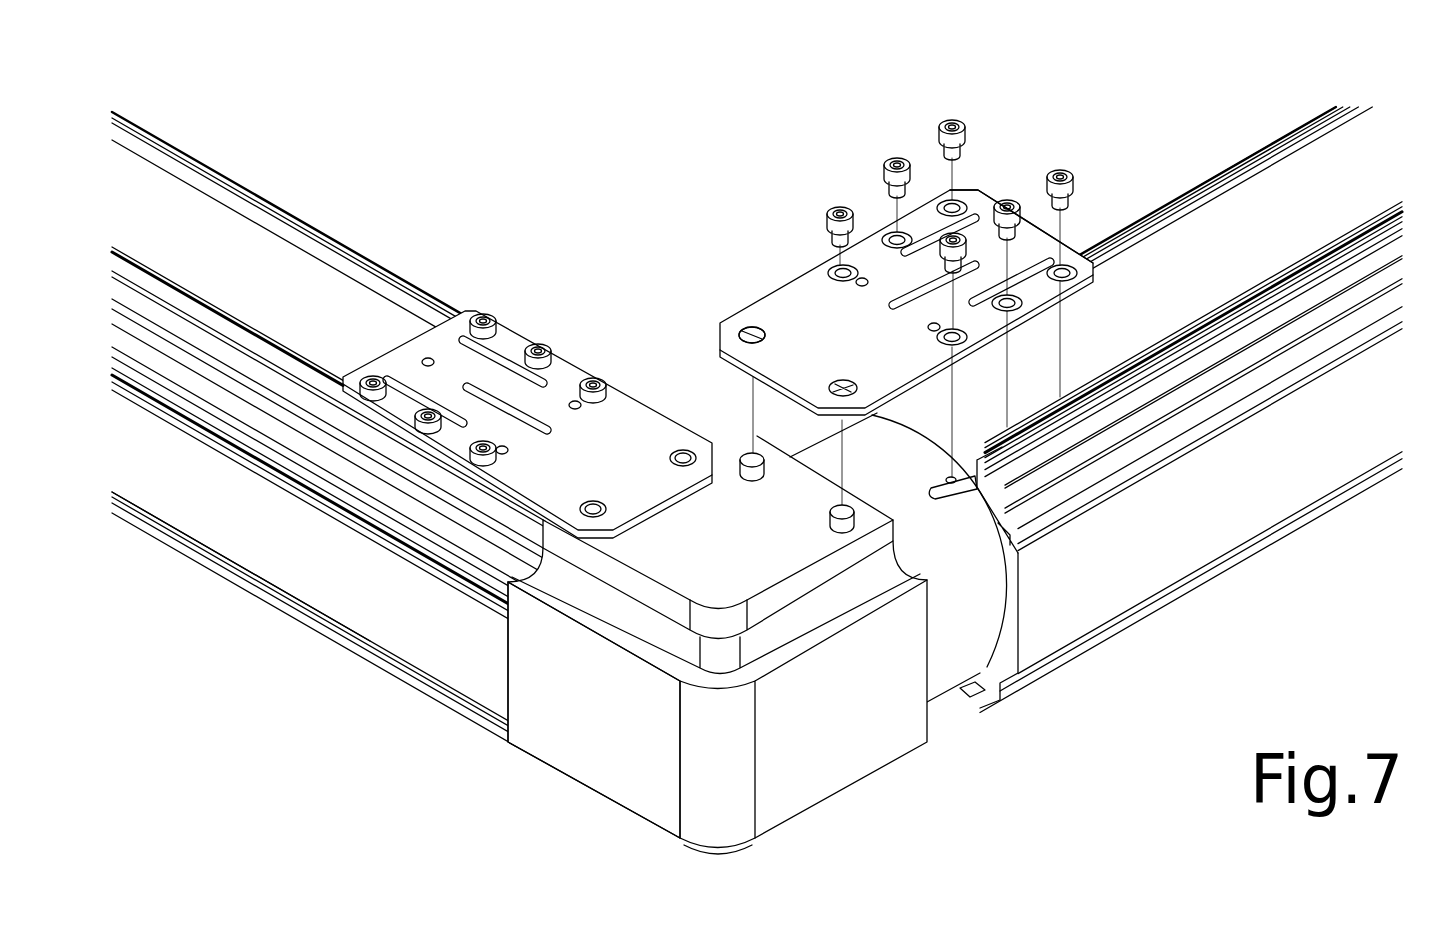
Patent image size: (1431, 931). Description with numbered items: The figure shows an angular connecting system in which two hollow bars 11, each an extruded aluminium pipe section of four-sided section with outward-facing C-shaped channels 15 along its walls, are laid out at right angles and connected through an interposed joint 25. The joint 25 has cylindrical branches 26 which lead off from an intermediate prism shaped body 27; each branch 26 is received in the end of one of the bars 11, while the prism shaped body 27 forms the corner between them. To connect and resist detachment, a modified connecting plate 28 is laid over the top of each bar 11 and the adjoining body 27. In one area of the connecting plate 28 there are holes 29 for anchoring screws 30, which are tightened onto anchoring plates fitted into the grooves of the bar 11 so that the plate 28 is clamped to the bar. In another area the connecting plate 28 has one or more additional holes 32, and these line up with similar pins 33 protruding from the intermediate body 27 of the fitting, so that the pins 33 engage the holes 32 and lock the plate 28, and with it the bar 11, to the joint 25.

The hollow bar 11 is at (213, 503).
The channels 15 is at (370, 653).
The joint 25 is at (675, 590).
The cylindrical branches 26 is at (943, 628).
The intermediate prism shaped body 27 is at (607, 733).
The connecting plate 28 is at (445, 343).
The holes 29 is at (953, 192).
The anchoring screws 30 is at (537, 345).
The additional holes 32 is at (752, 330).
The pins 33 is at (747, 452).